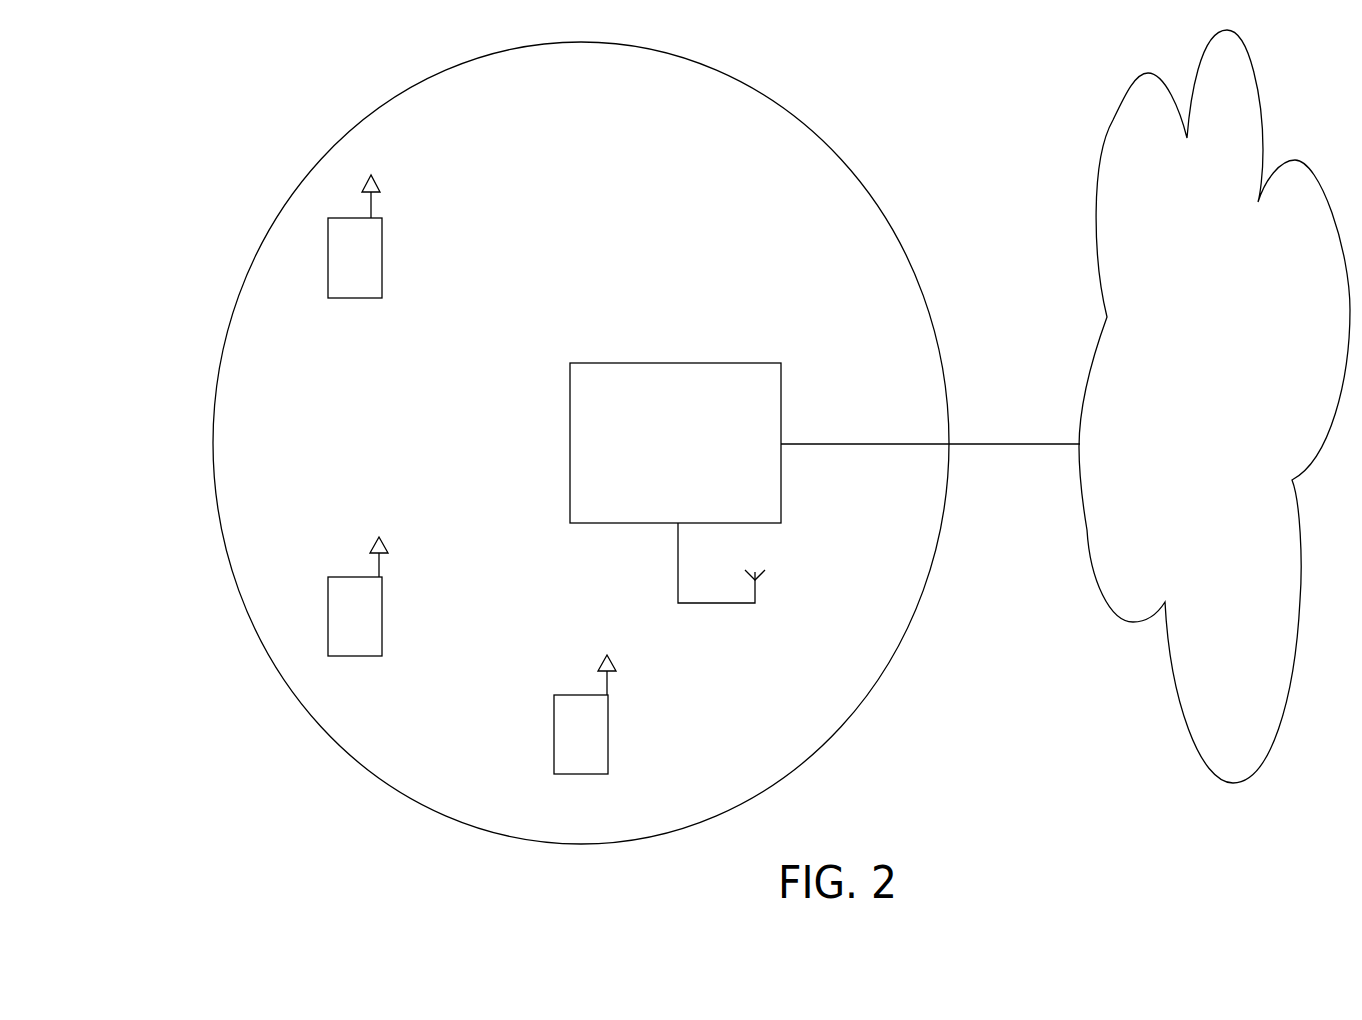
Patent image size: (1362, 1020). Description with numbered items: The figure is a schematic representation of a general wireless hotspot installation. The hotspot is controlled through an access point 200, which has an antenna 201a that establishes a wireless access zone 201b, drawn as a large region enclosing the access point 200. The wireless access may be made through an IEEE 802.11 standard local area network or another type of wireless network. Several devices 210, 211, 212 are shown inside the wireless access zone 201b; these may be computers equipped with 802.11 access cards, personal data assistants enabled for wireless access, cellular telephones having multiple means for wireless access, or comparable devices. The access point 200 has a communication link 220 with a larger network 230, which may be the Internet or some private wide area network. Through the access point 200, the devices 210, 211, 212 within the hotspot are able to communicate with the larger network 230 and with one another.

The access point 200 is at (764, 517).
The antenna 201a is at (678, 577).
The wireless access zone 201b is at (607, 91).
The device 210 is at (382, 258).
The device 211 is at (382, 642).
The device 212 is at (608, 758).
The communication link 220 is at (1018, 444).
The larger network 230 is at (1252, 652).